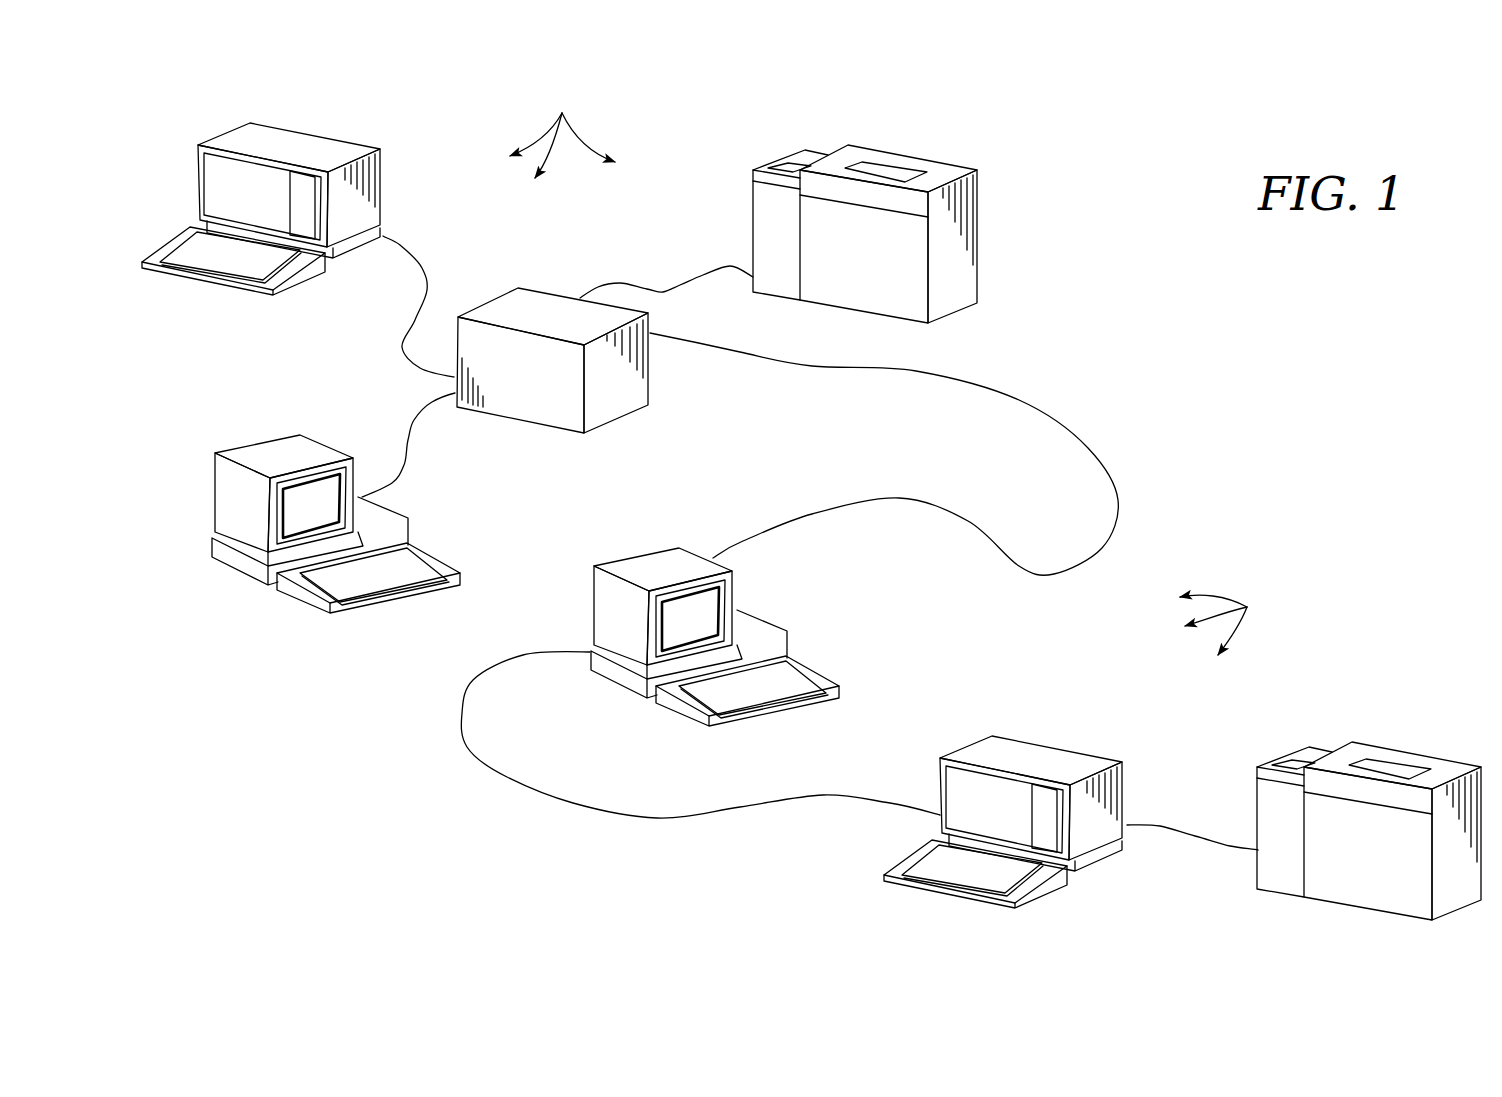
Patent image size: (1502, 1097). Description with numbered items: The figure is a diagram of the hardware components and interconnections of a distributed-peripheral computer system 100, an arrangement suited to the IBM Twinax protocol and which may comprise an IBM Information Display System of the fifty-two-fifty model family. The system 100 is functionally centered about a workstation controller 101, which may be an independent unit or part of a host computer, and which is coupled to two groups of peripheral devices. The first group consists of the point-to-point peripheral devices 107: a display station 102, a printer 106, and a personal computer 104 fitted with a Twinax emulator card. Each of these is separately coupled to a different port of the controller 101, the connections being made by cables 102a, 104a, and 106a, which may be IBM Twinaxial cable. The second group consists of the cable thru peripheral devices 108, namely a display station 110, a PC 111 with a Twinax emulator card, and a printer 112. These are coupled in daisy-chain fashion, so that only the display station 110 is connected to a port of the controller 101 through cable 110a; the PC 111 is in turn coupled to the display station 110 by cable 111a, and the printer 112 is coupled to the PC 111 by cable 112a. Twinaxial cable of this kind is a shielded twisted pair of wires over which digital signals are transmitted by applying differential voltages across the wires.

The computer system 100 is at (321, 818).
The workstation controller 101 is at (618, 422).
The display station 102 is at (317, 133).
The cable 102a is at (412, 243).
The personal computer 104 is at (248, 445).
The cable 104a is at (428, 495).
The printer 106 is at (948, 163).
The cable 106a is at (623, 282).
The point-to-point peripheral devices 107 is at (562, 127).
The cable thru peripheral devices 108 is at (1244, 624).
The display station 110 is at (623, 557).
The cable 110a is at (1120, 499).
The personal computer 111 is at (1077, 750).
The cable 111a is at (460, 713).
The printer 112 is at (1393, 750).
The cable 112a is at (1195, 838).